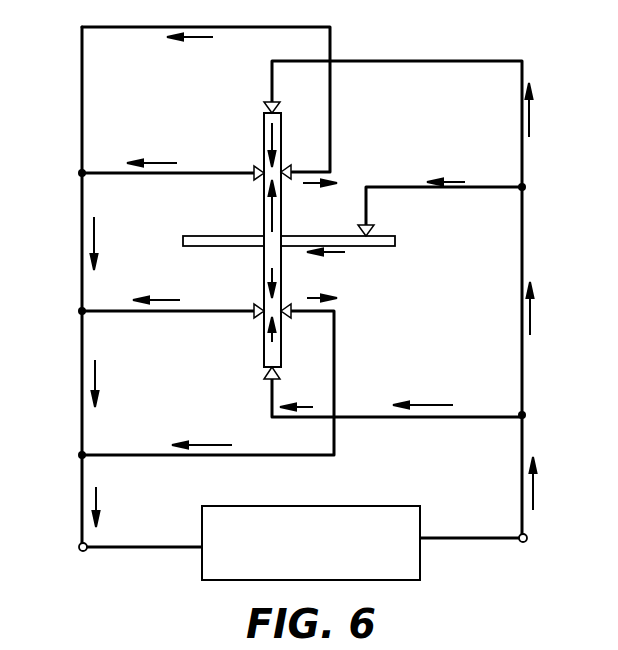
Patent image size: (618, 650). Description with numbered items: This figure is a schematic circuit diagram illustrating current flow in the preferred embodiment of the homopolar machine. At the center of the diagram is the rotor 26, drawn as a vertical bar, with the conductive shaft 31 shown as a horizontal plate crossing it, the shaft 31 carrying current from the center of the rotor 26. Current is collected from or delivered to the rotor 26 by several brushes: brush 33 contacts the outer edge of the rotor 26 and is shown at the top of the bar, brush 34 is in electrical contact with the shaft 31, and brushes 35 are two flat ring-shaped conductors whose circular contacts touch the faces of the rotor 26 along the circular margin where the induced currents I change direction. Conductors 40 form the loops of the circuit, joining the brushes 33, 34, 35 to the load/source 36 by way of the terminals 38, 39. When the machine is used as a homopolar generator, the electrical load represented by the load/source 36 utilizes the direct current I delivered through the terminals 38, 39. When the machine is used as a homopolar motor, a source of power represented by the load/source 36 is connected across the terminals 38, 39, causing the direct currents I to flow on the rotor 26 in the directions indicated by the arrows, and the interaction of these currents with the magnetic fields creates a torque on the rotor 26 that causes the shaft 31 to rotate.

The rotor 26 is at (272, 312).
The shaft 31 is at (203, 240).
The brush 33 is at (268, 110).
The brush 34 is at (367, 231).
The brushes 35 is at (292, 172).
The load/source 36 is at (367, 506).
The terminal 38 is at (84, 552).
The terminal 39 is at (528, 539).
The conductors 40 is at (82, 201).
The direct currents I is at (263, 134).